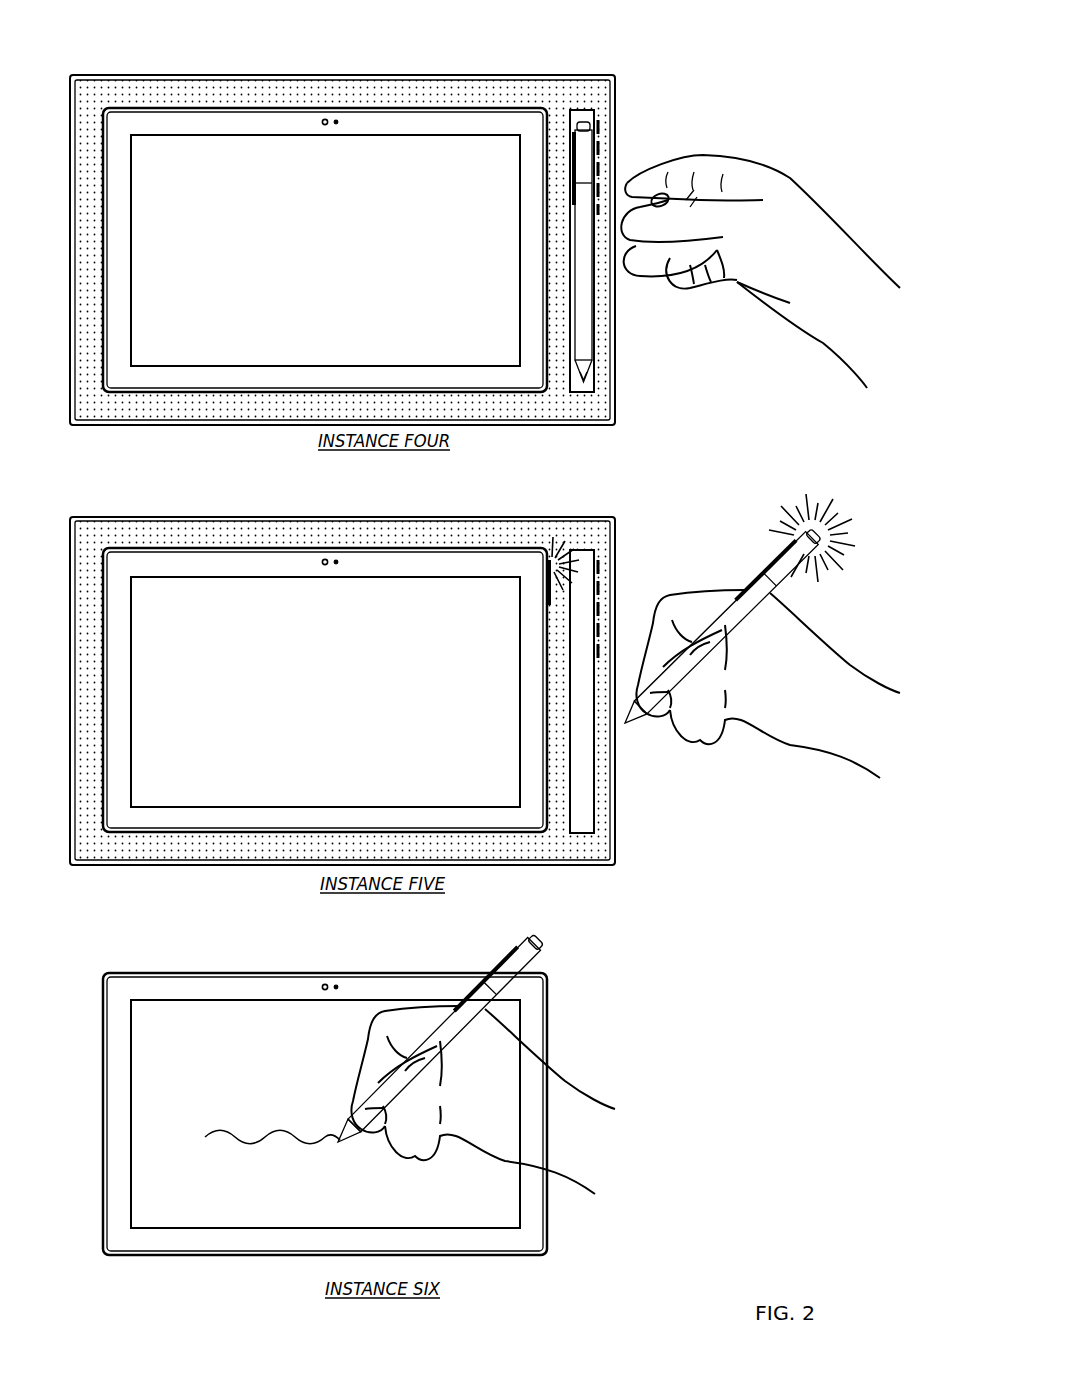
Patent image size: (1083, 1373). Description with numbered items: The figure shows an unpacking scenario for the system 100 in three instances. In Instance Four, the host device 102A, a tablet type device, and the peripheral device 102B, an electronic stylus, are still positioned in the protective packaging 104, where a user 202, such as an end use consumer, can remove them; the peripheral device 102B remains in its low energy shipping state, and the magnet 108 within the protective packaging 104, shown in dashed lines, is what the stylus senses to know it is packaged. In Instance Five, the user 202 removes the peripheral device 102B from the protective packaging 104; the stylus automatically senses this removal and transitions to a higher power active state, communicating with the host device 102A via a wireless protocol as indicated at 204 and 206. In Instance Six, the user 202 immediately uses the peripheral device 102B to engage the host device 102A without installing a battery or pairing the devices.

The system 100 is at (540, 26).
The host device 102A is at (192, 106).
The peripheral device 102B is at (597, 346).
The protective packaging 104 is at (666, 872).
The magnet 108 is at (602, 144).
The user 202 is at (615, 1169).
The wireless protocol communication indication 204 is at (823, 504).
The wireless protocol communication indication 206 is at (575, 547).